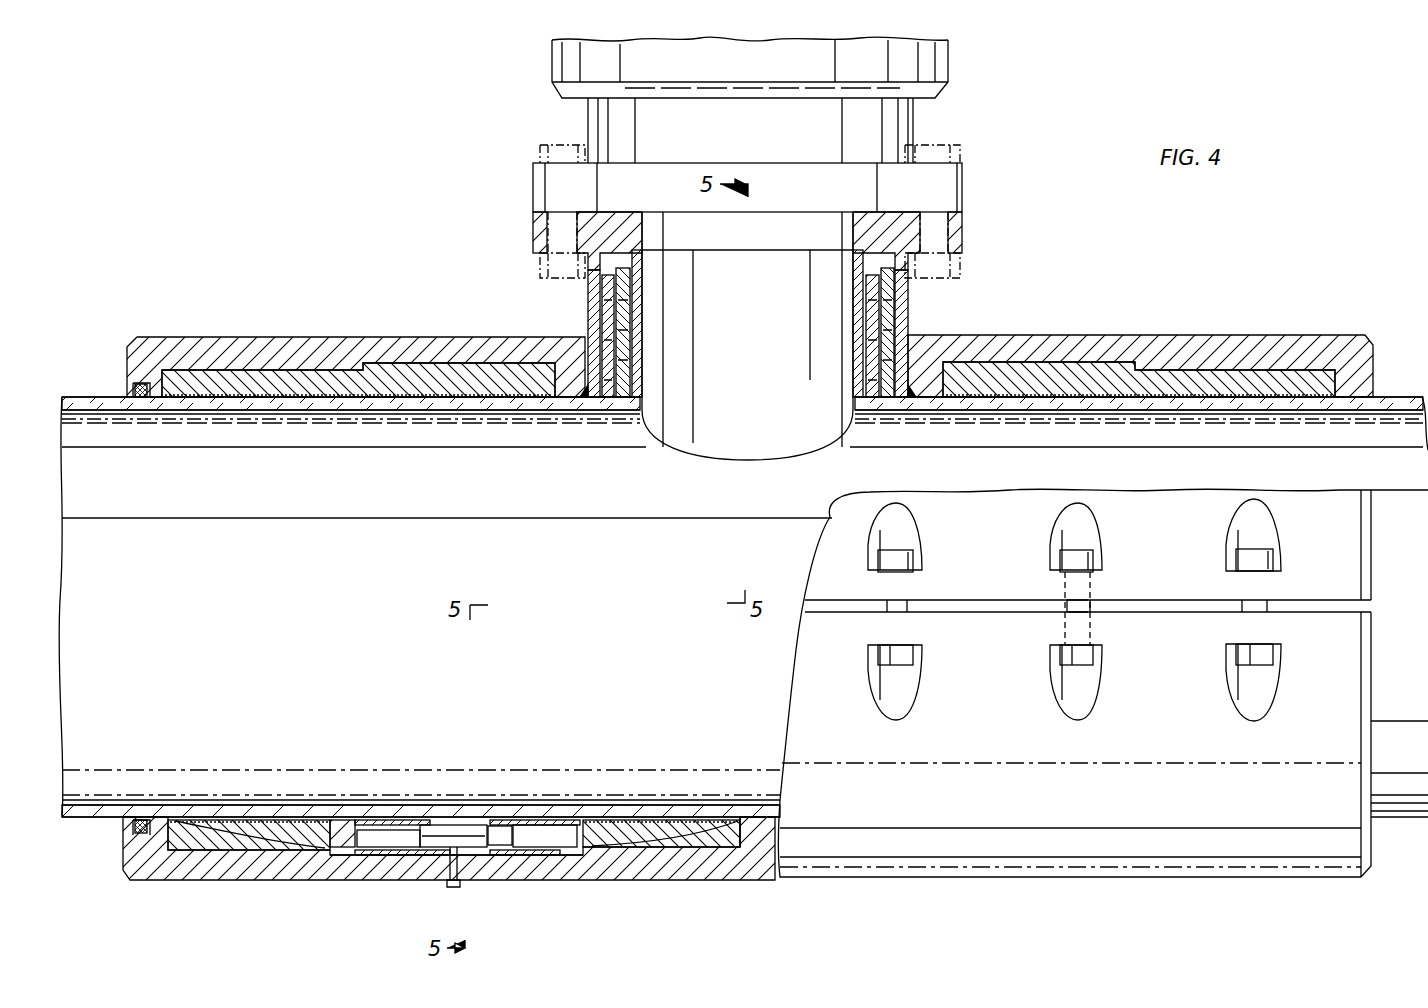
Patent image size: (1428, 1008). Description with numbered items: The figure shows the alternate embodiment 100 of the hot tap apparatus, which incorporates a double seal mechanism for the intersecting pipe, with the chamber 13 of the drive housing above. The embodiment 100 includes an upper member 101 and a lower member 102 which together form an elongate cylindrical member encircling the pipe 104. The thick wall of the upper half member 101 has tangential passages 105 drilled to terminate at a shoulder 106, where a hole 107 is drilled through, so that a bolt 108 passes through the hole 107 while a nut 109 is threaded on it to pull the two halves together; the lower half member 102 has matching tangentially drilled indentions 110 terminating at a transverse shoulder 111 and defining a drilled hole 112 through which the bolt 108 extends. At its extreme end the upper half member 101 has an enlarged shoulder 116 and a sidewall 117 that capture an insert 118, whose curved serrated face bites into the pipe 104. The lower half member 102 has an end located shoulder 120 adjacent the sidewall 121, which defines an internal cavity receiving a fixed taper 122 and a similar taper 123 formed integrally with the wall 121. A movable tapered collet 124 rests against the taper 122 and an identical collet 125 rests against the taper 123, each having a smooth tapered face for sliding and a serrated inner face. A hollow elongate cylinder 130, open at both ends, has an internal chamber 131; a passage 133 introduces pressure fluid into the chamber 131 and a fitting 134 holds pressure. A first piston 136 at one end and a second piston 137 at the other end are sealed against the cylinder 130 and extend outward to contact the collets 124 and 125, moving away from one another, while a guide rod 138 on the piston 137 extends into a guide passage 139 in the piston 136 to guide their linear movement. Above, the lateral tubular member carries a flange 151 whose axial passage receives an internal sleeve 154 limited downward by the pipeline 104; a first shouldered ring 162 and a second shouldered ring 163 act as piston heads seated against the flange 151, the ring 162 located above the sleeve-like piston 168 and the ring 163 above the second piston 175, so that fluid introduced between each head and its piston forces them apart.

The alternate embodiment 100 is at (369, 162).
The chamber 13 is at (948, 50).
The flange 151 is at (962, 172).
The internal sleeve 154 is at (642, 280).
The second shouldered ring 163 is at (630, 313).
The first shouldered ring 162 is at (602, 305).
The second piston 175 is at (900, 325).
The piston 168 is at (950, 348).
The enlarged shoulder 116 is at (127, 365).
The upper member 101 is at (163, 330).
The insert 118 is at (236, 378).
The sidewall 117 is at (327, 345).
The pipe 104 is at (76, 397).
The tangential passages 105 is at (903, 530).
The bolt 108 is at (1083, 548).
The shoulder 106 is at (877, 572).
The hole 107 is at (1063, 585).
The drilled hole 112 is at (1063, 628).
The transverse shoulder 111 is at (1097, 647).
The nut 109 is at (1055, 685).
The tangentially drilled indentions 110 is at (888, 690).
The end located shoulder 120 is at (125, 852).
The lower member 102 is at (182, 880).
The fixed taper 122 is at (262, 850).
The movable tapered collet 124 is at (262, 815).
The first piston 136 is at (338, 820).
The guide passage 139 is at (380, 830).
The internal chamber 131 is at (458, 825).
The guide rod 138 is at (498, 826).
The second piston 137 is at (557, 825).
The tapered collet 125 is at (637, 823).
The hollow elongate cylinder 130 is at (372, 855).
The passage 133 is at (432, 880).
The fitting 134 is at (459, 887).
The sidewall 121 is at (525, 866).
The taper 123 is at (688, 840).